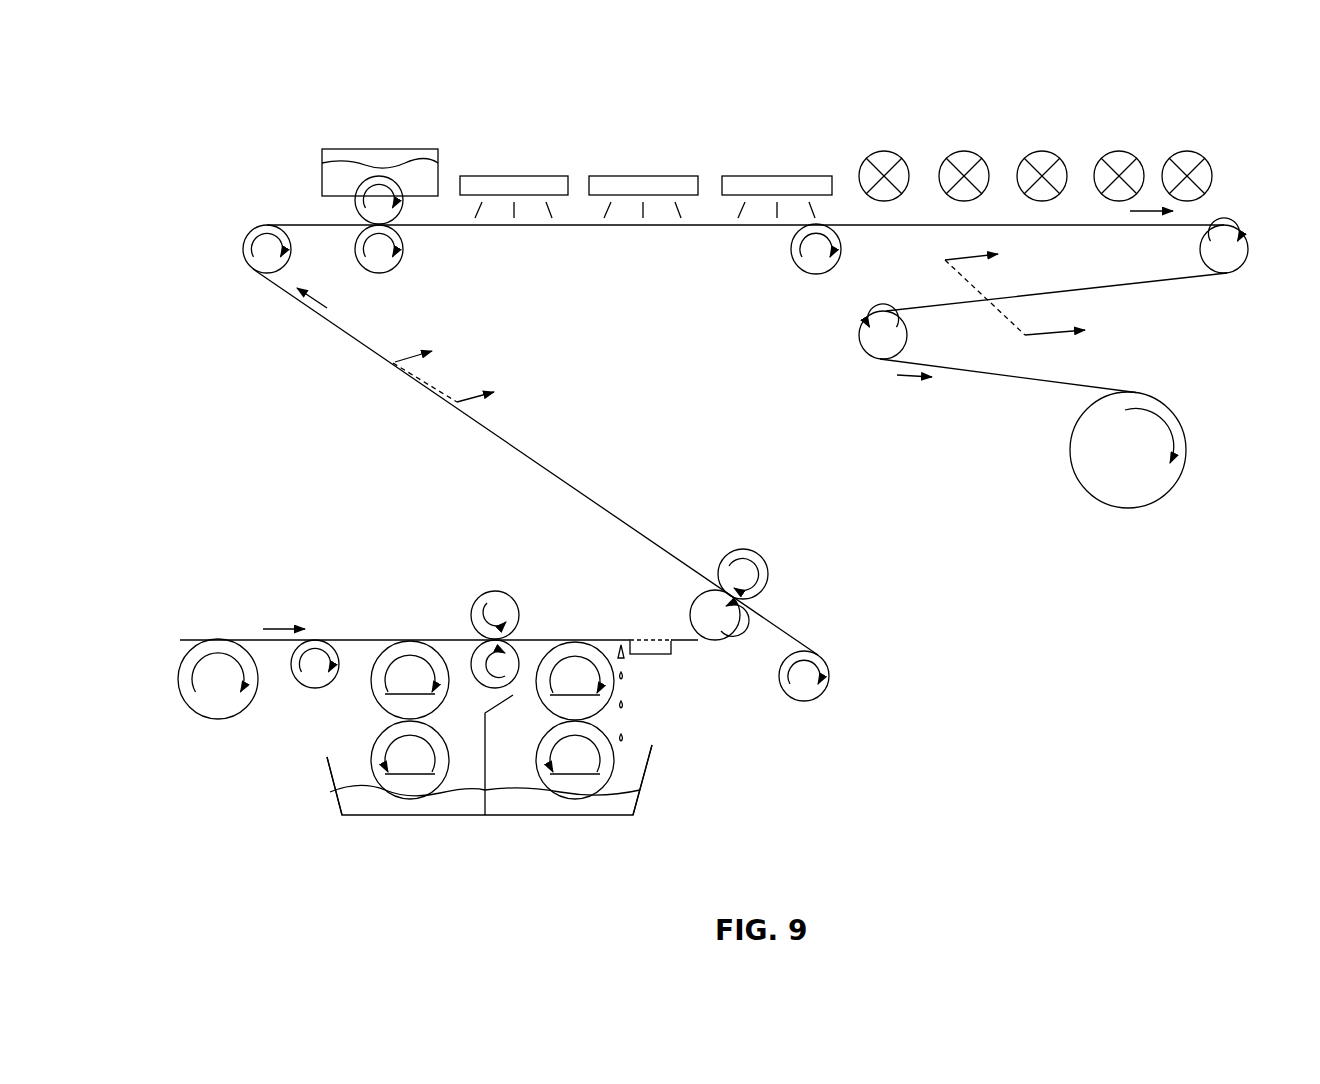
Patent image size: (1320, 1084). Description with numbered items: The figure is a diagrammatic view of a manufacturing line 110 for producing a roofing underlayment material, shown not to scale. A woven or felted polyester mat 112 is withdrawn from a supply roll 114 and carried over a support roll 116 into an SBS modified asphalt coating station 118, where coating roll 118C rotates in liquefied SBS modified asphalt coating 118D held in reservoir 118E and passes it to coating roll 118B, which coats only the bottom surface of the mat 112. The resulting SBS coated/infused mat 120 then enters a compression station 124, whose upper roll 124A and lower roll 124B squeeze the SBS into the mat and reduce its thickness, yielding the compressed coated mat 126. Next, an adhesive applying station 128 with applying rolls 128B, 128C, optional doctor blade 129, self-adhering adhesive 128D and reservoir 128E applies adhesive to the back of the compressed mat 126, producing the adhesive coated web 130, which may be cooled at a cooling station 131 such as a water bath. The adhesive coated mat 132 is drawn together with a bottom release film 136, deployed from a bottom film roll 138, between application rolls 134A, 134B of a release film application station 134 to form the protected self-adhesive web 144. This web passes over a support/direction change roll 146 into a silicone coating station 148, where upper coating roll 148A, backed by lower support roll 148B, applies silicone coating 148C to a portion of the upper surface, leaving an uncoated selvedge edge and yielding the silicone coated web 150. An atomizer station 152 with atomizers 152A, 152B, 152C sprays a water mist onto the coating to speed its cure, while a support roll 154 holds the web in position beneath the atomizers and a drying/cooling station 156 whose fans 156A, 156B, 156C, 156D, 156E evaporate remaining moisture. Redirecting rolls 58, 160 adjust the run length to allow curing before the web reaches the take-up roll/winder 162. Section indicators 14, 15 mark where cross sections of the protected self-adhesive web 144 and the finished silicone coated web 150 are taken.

The manufacturing line 110 is at (205, 100).
The polyester mat 112 is at (253, 638).
The supply roll 114 is at (217, 710).
The support roll 116 is at (312, 680).
The SBS modified asphalt coating station 118 is at (446, 708).
The coating roll 118B is at (410, 680).
The coating roll 118C is at (410, 760).
The SBS modified asphalt coating 118D is at (453, 805).
The reservoir 118E is at (330, 773).
The SBS coated/infused mat 120 is at (453, 639).
The compression station 124 is at (504, 601).
The upper roll 124A is at (498, 591).
The lower roll 124B is at (500, 668).
The compressed coated mat 126 is at (530, 639).
The adhesive applying station 128 is at (634, 670).
The applying roll 128B is at (575, 681).
The applying roll 128C is at (575, 760).
The self-adhering adhesive 128D is at (551, 805).
The reservoir 128E is at (636, 803).
The doctor blade 129 is at (623, 659).
The adhesive coated web 130 is at (616, 639).
The cooling station 131 is at (650, 659).
The adhesive coated mat 132 is at (691, 642).
The release film application station 134 is at (767, 552).
The application roll 134A is at (748, 562).
The application roll 134B is at (705, 608).
The bottom release film 136 is at (790, 637).
The bottom film roll 138 is at (832, 680).
The protected self-adhesive web 144 is at (636, 531).
The support/direction change roll 146 is at (242, 247).
The silicone coating station 148 is at (360, 179).
The upper coating roll 148A is at (383, 187).
The lower support roll 148B is at (388, 260).
The silicone coating 148C is at (330, 178).
The silicone coated web 150 is at (503, 227).
The atomizer station 152 is at (646, 144).
The atomizer 152A is at (517, 185).
The atomizer 152B is at (677, 185).
The atomizer 152C is at (773, 185).
The support roll 154 is at (810, 274).
The drying/cooling station 156 is at (1026, 131).
The fan 156A is at (885, 160).
The fan 156B is at (965, 160).
The fan 156C is at (1043, 160).
The fan 156D is at (1123, 160).
The fan 156E is at (1188, 160).
The turning roller 58 is at (1235, 232).
The support/redirecting roll 160 is at (897, 340).
The take-up roll/winder 162 is at (1155, 410).
The section line for FIG. 14 is at (460, 369).
The section line for FIG. 15 is at (1033, 293).